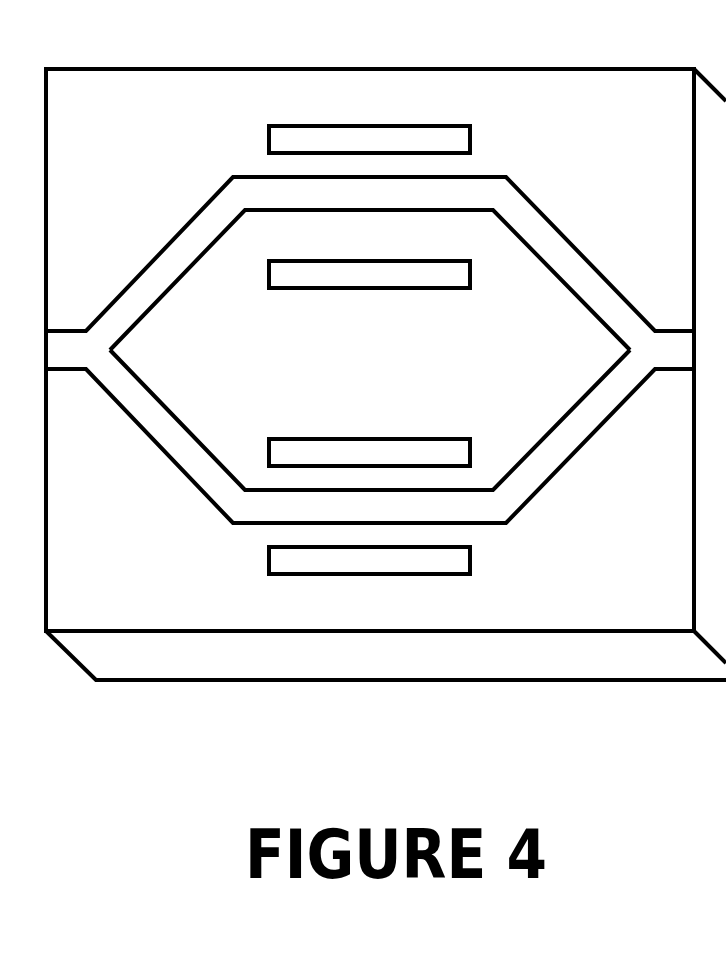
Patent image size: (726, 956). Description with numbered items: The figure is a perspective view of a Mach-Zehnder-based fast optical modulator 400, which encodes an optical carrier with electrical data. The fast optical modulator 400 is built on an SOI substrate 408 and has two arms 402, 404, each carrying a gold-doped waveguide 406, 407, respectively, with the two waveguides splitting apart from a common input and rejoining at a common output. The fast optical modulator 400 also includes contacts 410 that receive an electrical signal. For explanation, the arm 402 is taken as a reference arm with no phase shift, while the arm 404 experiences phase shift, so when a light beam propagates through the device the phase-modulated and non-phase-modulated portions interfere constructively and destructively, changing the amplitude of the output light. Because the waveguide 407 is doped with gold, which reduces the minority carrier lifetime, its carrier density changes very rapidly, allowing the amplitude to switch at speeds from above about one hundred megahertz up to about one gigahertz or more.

The fast optical modulator 400 is at (679, 759).
The arm 402 is at (140, 188).
The arm 404 is at (140, 514).
The gold-doped waveguide 406 is at (490, 176).
The gold-doped waveguide 407 is at (491, 524).
The SOI substrate 408 is at (617, 88).
The contacts 410 is at (269, 139).